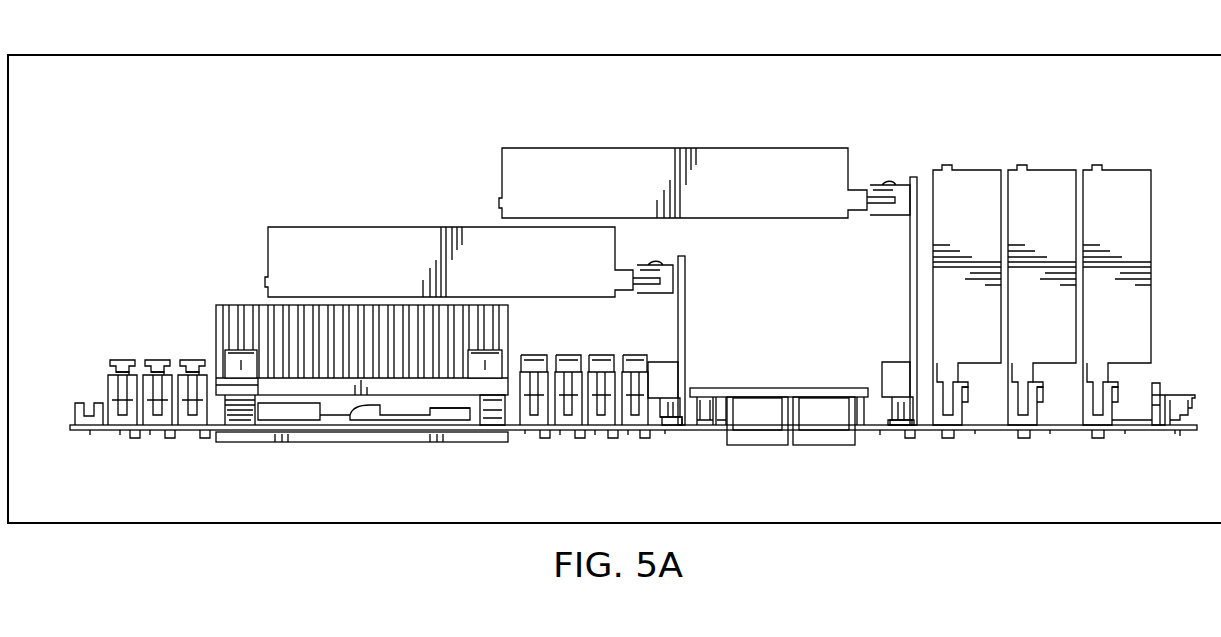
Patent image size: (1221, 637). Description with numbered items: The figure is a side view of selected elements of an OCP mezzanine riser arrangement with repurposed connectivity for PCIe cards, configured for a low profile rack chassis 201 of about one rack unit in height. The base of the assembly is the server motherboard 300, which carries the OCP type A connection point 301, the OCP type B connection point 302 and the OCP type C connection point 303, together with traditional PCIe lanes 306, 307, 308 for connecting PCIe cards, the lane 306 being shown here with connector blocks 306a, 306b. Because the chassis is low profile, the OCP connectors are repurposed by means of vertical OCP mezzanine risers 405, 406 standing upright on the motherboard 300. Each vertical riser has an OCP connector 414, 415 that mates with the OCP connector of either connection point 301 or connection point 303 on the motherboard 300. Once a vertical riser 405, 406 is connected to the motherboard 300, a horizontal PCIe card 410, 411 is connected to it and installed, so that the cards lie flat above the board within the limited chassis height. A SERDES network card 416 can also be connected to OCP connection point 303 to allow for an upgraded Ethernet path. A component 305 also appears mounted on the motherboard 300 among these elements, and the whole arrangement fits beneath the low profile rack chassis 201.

The low profile rack chassis 201 is at (182, 40).
The server motherboard 300 is at (1140, 436).
The OCP type A connection point 301 is at (892, 410).
The OCP type B connection point 302 is at (655, 415).
The OCP type C connection point 303 is at (692, 410).
The heat sink 305 is at (236, 305).
The PCIe lane 306 is at (1082, 413).
The connector block 306a is at (823, 445).
The connector block 306b is at (757, 445).
The PCIe lane 307 is at (1007, 413).
The PCIe lane 308 is at (932, 413).
The vertical OCP mezzanine riser 405 is at (910, 283).
The vertical OCP mezzanine riser 406 is at (686, 305).
The horizontal PCIe card 410 is at (752, 158).
The horizontal PCIe card 411 is at (362, 236).
The OCP connector 414 is at (898, 360).
The OCP connector 415 is at (665, 360).
The SERDES network card 416 is at (788, 388).